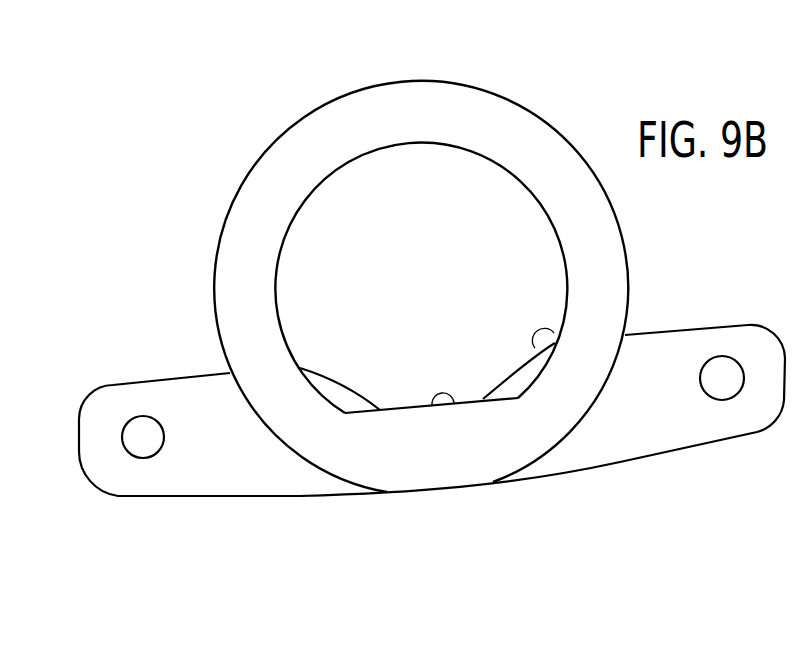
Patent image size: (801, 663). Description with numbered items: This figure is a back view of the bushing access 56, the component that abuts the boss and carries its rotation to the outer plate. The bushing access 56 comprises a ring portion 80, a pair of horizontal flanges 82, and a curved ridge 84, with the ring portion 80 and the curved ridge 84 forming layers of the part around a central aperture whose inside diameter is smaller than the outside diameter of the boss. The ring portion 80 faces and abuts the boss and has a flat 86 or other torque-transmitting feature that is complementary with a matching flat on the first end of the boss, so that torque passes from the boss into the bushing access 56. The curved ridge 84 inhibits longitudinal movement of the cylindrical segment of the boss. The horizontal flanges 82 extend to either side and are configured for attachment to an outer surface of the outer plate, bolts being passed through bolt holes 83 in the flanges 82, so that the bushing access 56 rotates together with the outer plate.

The bushing access 56 is at (573, 82).
The ring portion 80 is at (378, 107).
The horizontal flanges 82 is at (166, 483).
The bolt holes 83 is at (143, 437).
The curved ridge 84 is at (533, 329).
The flat 86 is at (432, 399).